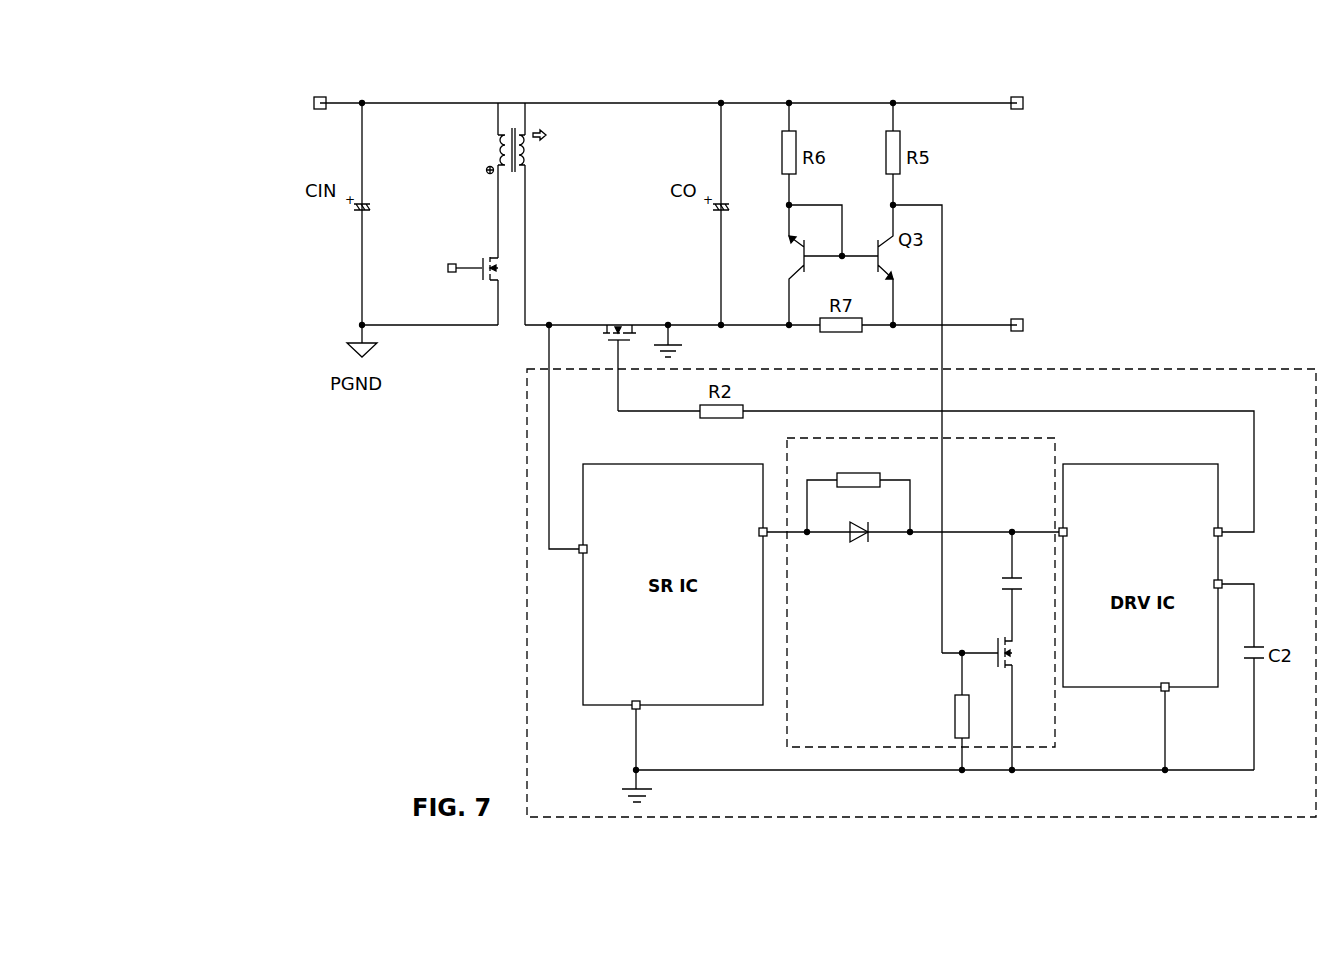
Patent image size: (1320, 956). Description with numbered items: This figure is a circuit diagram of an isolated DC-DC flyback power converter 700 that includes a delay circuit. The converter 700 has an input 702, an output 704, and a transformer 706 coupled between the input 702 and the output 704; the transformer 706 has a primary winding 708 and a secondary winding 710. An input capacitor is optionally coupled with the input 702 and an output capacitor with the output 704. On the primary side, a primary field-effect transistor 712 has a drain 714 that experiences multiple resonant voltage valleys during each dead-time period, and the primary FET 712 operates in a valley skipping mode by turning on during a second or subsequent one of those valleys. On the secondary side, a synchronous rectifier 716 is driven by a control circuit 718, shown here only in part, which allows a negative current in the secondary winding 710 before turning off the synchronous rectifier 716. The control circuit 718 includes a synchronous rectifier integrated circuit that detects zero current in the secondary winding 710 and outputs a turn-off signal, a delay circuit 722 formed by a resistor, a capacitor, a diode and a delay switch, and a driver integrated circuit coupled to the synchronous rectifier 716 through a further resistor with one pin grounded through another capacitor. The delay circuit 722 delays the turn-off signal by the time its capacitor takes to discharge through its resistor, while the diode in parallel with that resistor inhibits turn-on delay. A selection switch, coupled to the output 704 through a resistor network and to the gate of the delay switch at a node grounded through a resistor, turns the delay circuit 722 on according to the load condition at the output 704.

The isolated DC-DC flyback power converter 700 is at (1115, 100).
The input 702 is at (318, 96).
The output 704 is at (1016, 96).
The transformer 706 is at (525, 118).
The primary winding 708 is at (496, 153).
The secondary winding 710 is at (540, 150).
The primary field-effect transistor 712 is at (480, 264).
The drain 714 is at (498, 214).
The synchronous rectifier 716 is at (618, 322).
The control circuit 718 is at (527, 612).
The delay circuit 722 is at (786, 705).